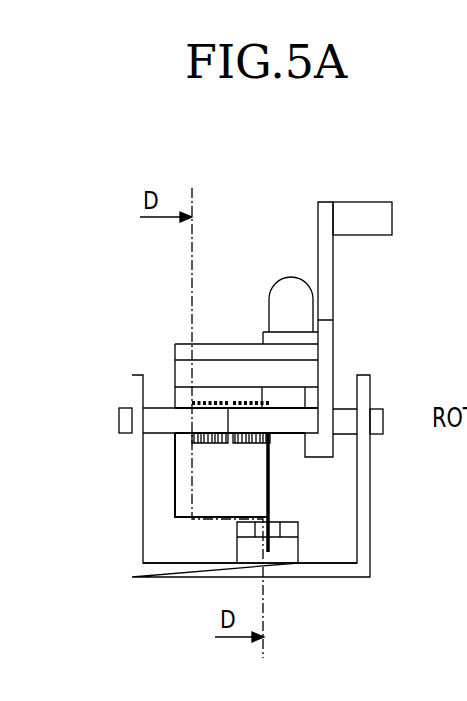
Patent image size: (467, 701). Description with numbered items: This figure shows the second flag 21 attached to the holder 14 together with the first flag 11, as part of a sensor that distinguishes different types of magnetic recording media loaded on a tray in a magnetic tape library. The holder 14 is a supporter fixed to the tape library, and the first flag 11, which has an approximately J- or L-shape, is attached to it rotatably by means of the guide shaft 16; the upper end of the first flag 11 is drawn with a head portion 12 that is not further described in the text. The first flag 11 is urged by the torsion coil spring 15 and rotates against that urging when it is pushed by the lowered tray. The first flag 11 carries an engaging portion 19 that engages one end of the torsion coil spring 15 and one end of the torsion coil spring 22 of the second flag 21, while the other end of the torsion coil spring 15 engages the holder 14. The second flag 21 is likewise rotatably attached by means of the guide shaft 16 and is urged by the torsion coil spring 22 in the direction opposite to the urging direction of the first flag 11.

The first flag 11 is at (333, 275).
The head portion 12 is at (347, 200).
The holder 14 is at (338, 578).
The torsion coil spring 15 is at (250, 445).
The guide shaft 16 is at (119, 420).
The engaging portion 19 is at (180, 418).
The second flag 21 is at (217, 350).
The torsion coil spring 22 is at (213, 443).